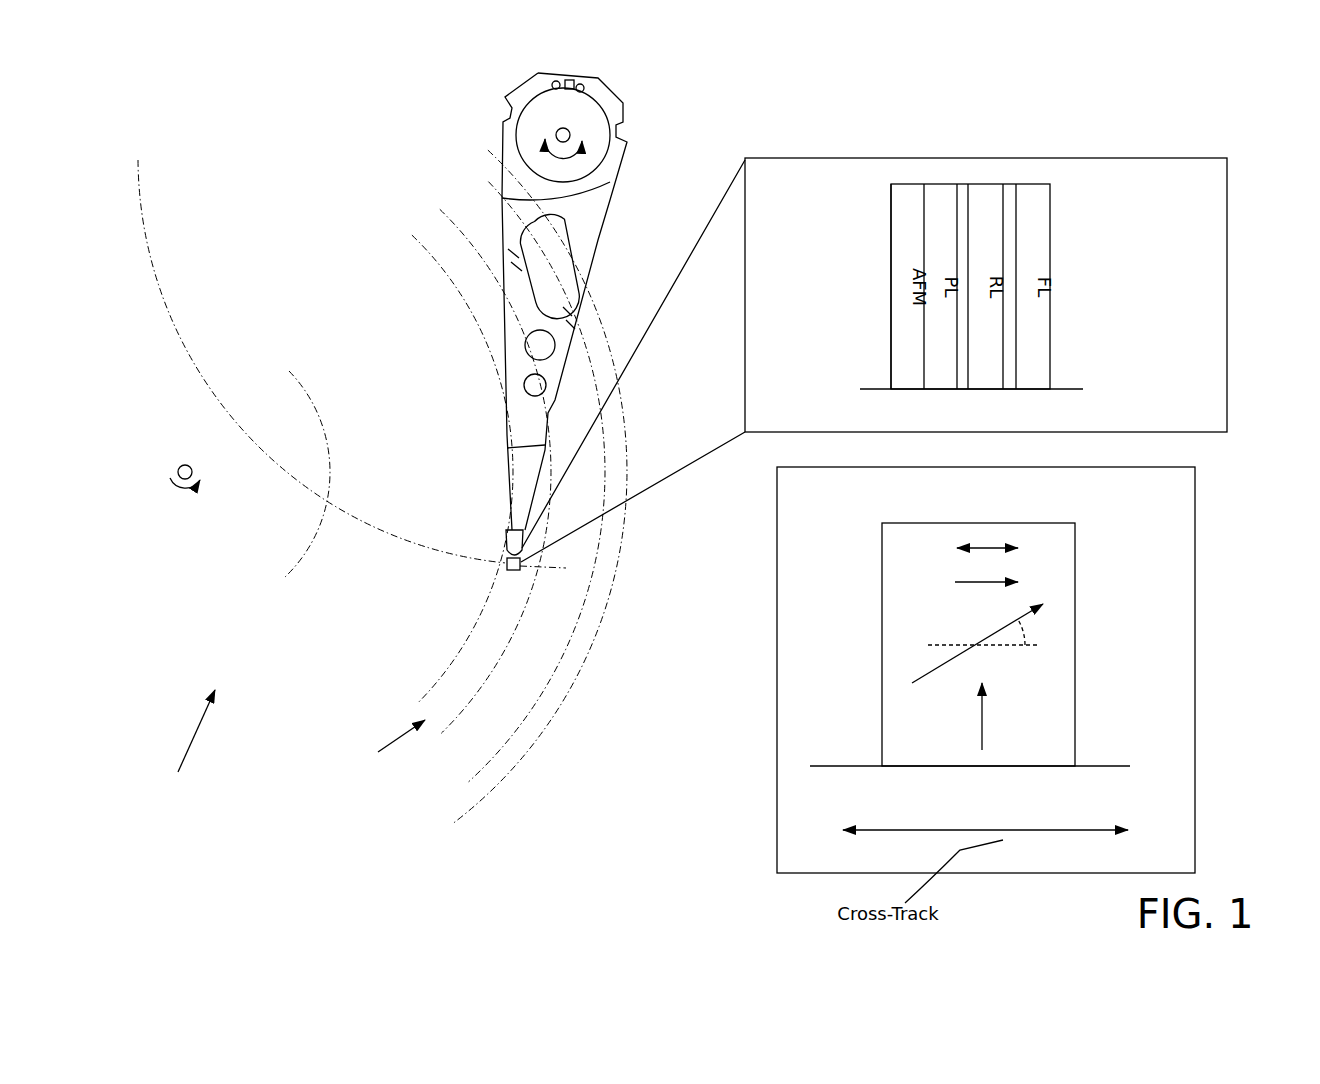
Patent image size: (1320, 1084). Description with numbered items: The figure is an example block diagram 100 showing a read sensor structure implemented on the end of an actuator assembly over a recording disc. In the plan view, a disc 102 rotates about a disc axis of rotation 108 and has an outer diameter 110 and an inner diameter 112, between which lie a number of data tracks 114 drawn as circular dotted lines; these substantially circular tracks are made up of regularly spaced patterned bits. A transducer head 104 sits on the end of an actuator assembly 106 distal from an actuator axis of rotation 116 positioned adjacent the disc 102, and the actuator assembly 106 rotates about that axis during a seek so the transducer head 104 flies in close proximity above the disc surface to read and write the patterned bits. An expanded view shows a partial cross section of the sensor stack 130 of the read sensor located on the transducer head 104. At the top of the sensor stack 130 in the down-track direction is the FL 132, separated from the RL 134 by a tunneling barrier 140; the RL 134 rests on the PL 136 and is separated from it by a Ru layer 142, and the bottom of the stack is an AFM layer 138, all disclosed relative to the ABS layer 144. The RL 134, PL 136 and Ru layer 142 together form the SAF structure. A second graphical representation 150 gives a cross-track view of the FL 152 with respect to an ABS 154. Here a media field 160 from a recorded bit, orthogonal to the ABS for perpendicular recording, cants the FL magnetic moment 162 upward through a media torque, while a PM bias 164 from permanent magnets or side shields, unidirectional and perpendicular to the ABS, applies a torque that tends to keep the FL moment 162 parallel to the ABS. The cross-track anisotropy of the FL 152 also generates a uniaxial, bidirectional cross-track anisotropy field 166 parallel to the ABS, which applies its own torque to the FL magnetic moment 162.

The block diagram 100 is at (197, 150).
The disc 102 is at (178, 765).
The transducer head 104 is at (506, 565).
The actuator assembly 106 is at (503, 126).
The disc axis of rotation 108 is at (170, 473).
The outer diameter 110 is at (478, 770).
The inner diameter 112 is at (298, 553).
The data tracks 114 is at (378, 752).
The actuator axis of rotation 116 is at (545, 137).
The sensor stack 130 is at (785, 158).
The FL 132 is at (1052, 267).
The RL 134 is at (977, 182).
The PL 136 is at (928, 182).
The AFM layer 138 is at (897, 182).
The tunneling barrier 140 is at (1013, 282).
The Ru layer 142 is at (964, 250).
The ABS layer 144 is at (1068, 392).
The graphical representation 150 is at (778, 737).
The FL 152 is at (1078, 588).
The ABS 154 is at (870, 767).
The media field 160 is at (986, 723).
The FL magnetic moment 162 is at (963, 657).
The PM bias 164 is at (970, 588).
The cross-track anisotropy field 166 is at (956, 551).